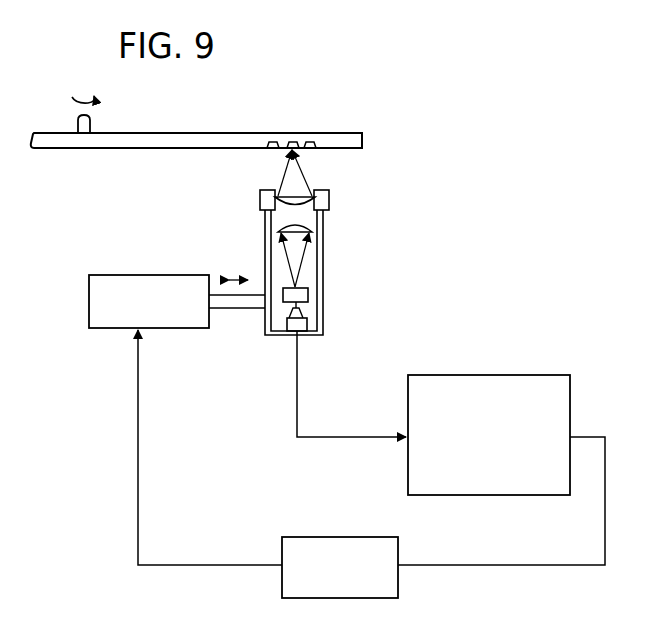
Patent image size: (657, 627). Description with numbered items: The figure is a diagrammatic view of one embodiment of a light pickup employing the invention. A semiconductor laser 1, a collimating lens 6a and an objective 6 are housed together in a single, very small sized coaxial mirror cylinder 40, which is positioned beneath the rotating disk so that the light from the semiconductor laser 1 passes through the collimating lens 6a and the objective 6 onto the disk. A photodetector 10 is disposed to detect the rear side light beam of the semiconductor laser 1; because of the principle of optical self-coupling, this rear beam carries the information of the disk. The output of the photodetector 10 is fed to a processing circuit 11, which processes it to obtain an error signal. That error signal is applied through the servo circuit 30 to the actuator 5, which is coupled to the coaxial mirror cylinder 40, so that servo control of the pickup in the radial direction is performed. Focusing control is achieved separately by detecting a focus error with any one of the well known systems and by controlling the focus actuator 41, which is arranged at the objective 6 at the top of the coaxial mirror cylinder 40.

The semiconductor laser 1 is at (310, 295).
The actuator 5 is at (145, 275).
The objective 6 is at (300, 197).
The collimating lens 6a is at (300, 228).
The photodetector 10 is at (310, 322).
The processing circuit 11 is at (503, 373).
The servo circuit 30 is at (316, 535).
The coaxial mirror cylinder 40 is at (325, 257).
The focus actuator 41 is at (258, 200).